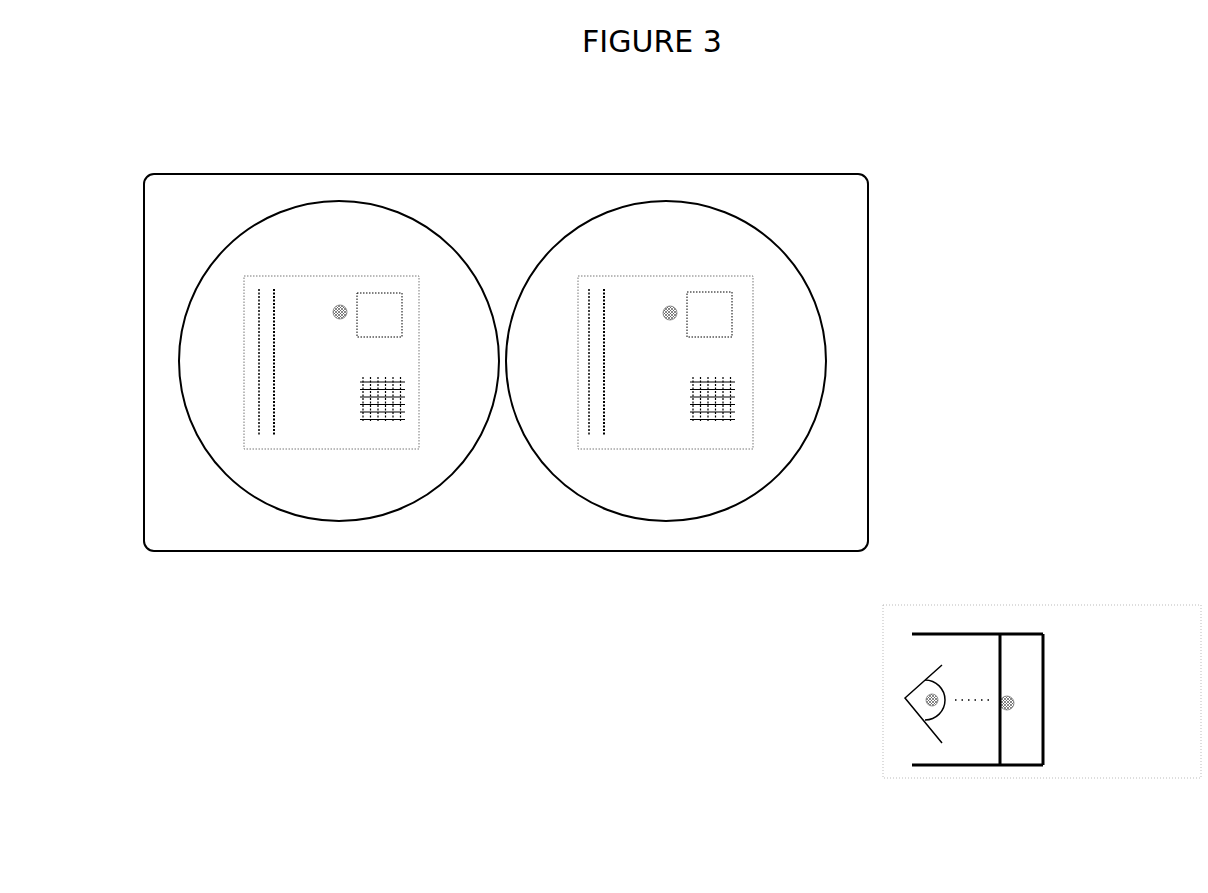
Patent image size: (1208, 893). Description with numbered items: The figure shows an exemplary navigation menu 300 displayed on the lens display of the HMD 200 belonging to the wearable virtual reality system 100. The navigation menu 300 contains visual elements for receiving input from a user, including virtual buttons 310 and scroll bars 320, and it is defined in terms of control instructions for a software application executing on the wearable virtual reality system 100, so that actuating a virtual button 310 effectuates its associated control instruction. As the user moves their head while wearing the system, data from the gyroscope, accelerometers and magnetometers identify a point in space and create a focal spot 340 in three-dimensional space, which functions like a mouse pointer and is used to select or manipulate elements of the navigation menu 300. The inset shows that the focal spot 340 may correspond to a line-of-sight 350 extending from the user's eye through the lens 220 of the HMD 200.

The wearable virtual reality system 100 is at (870, 173).
The HMD 200 is at (1032, 750).
The lens 220 is at (825, 325).
The navigation menu 300 is at (756, 405).
The virtual button 310 is at (709, 314).
The scroll bar 320 is at (603, 362).
The focal spot 340 is at (662, 298).
The line-of-sight 350 is at (714, 377).